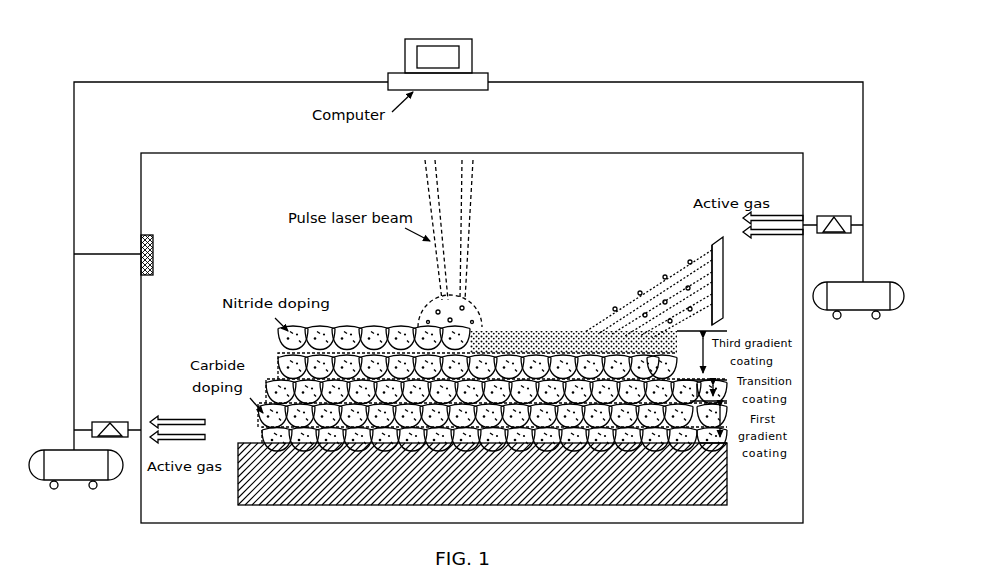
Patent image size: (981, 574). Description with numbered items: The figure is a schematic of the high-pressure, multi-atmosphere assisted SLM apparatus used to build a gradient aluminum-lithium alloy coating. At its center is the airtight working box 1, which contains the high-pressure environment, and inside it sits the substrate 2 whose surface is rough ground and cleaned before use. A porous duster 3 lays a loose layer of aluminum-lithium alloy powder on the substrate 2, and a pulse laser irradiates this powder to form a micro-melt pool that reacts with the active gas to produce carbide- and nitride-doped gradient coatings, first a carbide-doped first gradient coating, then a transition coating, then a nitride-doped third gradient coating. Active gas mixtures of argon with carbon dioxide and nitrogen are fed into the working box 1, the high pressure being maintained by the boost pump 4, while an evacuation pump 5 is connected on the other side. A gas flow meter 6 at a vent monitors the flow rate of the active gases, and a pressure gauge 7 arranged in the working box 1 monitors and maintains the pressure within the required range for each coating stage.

The working box 1 is at (603, 152).
The substrate 2 is at (734, 469).
The porous duster 3 is at (724, 272).
The boost pump 4 is at (900, 302).
The evacuation pump 5 is at (44, 451).
The gas flow meter 6 is at (851, 223).
The pressure gauge 7 is at (154, 274).